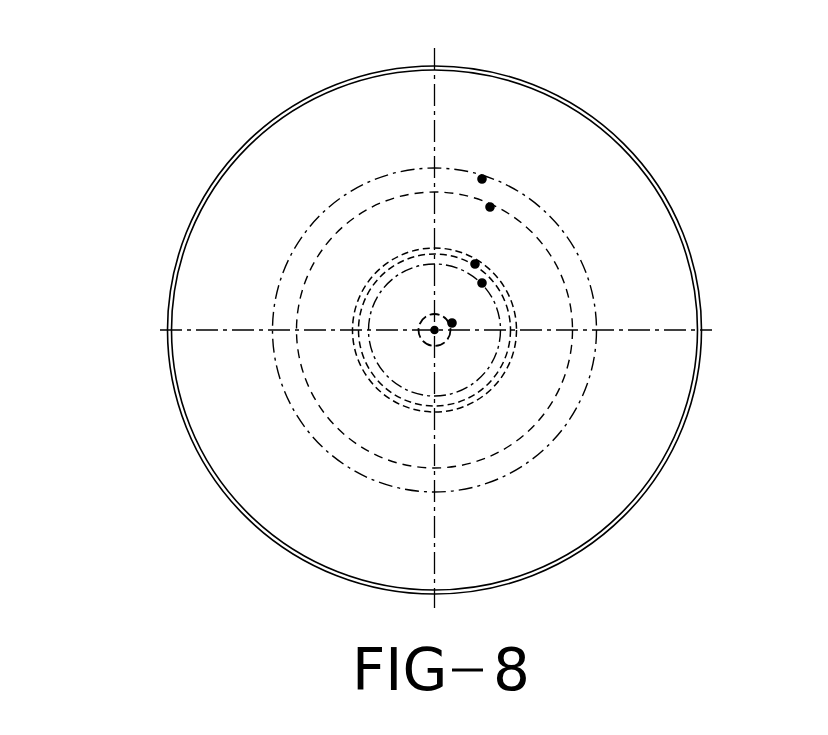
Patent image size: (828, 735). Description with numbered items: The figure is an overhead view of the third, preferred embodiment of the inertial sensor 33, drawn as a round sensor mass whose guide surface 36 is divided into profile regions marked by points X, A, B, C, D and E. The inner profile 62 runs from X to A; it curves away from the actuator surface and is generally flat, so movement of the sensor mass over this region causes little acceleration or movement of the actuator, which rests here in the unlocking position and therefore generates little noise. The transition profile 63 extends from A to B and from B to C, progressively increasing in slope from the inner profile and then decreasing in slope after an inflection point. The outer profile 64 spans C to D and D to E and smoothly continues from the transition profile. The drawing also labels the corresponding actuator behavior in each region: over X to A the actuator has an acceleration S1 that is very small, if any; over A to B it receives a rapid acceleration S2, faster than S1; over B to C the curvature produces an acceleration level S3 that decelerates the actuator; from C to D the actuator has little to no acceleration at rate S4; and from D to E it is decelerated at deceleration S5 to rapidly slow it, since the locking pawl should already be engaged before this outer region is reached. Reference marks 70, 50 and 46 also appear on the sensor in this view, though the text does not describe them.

The stiffening rib 70 is at (390, 178).
The transition profile 63 is at (470, 227).
The outer profile 64 is at (363, 202).
The inner hub zone 50 is at (390, 263).
The guide surface 36 is at (408, 310).
The disc face 46 is at (220, 300).
The sensor 33 is at (166, 361).
The inner profile 62 is at (402, 340).
The acceleration S1 is at (418, 345).
The acceleration S2 is at (418, 367).
The acceleration level S3 is at (412, 403).
The acceleration rate S4 is at (502, 412).
The deceleration S5 is at (495, 465).
The point X is at (436, 332).
The point A is at (452, 323).
The point B is at (482, 283).
The point C is at (475, 264).
The point D is at (490, 207).
The point E is at (482, 179).